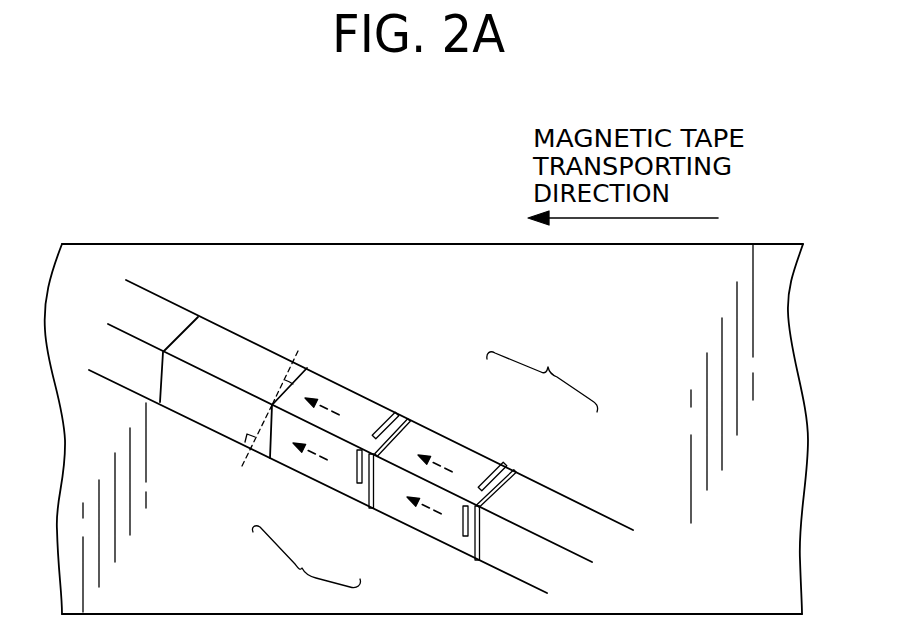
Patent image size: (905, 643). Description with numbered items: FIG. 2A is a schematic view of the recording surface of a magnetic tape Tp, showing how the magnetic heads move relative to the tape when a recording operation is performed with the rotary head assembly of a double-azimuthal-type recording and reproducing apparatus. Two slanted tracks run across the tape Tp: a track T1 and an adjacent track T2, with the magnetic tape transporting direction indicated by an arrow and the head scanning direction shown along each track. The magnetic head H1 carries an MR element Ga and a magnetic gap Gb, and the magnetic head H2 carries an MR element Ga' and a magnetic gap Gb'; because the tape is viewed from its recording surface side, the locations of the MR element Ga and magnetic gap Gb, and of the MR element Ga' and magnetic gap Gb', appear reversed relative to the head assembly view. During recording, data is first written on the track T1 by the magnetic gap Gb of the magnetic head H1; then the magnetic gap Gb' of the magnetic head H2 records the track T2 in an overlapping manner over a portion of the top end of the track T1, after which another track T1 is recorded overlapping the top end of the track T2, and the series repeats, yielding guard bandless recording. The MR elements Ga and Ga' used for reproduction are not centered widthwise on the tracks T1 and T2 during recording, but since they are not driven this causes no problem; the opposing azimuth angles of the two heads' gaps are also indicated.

The magnetic tape Tp is at (322, 244).
The track T1 is at (567, 578).
The track T2 is at (610, 542).
The magnetic head H1 is at (306, 567).
The magnetic head H2 is at (542, 374).
The MR element Ga is at (365, 502).
The magnetic gap Gb is at (400, 517).
The MR element Ga' is at (448, 430).
The magnetic gap Gb' is at (480, 453).